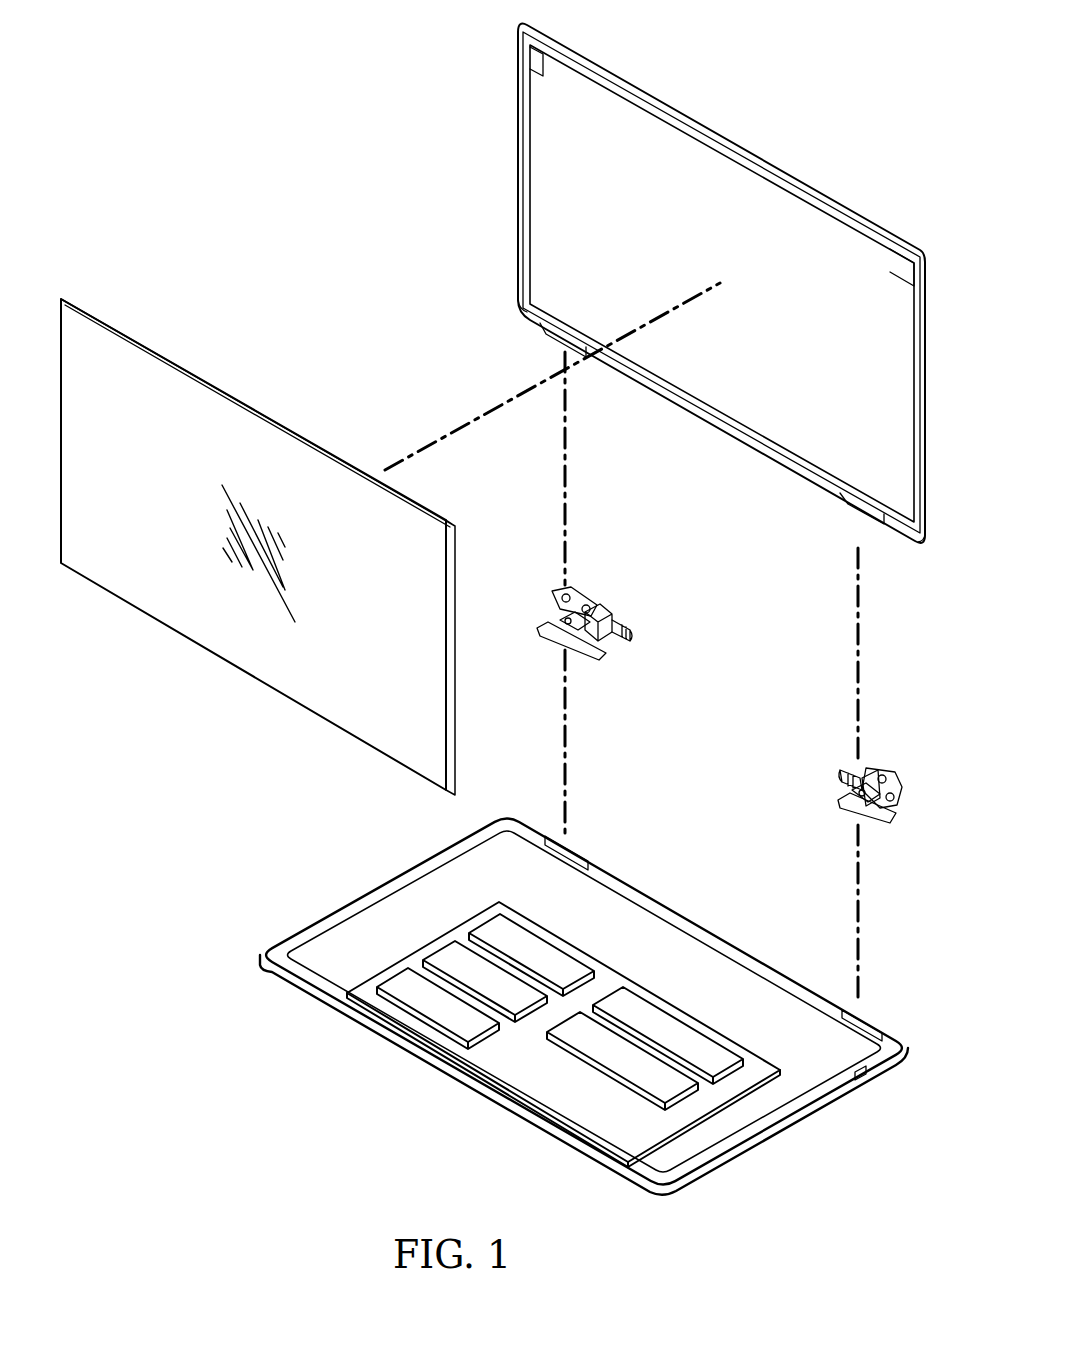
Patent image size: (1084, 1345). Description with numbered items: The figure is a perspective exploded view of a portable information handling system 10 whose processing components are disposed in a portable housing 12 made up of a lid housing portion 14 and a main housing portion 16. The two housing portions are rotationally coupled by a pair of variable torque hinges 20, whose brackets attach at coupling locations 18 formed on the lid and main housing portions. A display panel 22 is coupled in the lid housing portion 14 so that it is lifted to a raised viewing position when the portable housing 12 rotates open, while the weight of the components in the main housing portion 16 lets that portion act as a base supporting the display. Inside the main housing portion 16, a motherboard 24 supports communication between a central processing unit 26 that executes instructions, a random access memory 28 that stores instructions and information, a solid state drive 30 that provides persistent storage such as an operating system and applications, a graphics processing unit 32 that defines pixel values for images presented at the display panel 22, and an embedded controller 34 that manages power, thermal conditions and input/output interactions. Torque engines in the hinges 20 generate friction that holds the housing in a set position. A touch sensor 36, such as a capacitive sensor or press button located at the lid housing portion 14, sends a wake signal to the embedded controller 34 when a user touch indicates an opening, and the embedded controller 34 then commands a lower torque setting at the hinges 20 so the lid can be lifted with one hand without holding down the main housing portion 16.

The information handling system 10 is at (252, 162).
The portable housing 12 is at (815, 1143).
The lid housing portion 14 is at (722, 137).
The main housing portion 16 is at (304, 987).
The coupling location 18 is at (558, 332).
The hinge 20 is at (905, 745).
The display panel 22 is at (136, 526).
The motherboard 24 is at (562, 1088).
The central processing unit (CPU) 26 is at (495, 927).
The random access memory (RAM) 28 is at (448, 954).
The solid state drive (SSD) 30 is at (402, 983).
The graphics processing unit (GPU) 32 is at (635, 1004).
The embedded controller 34 is at (678, 1082).
The touch sensor 36 is at (538, 74).